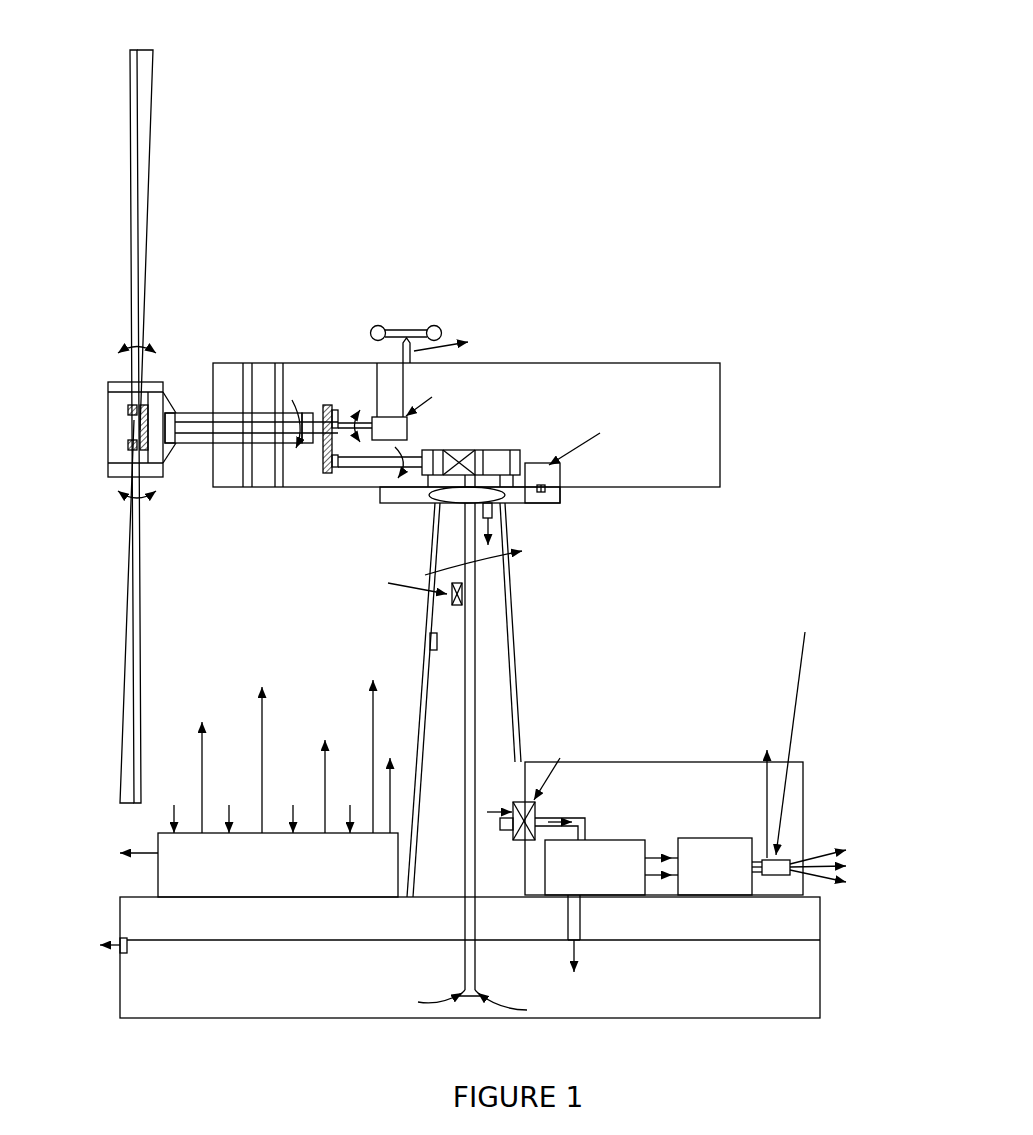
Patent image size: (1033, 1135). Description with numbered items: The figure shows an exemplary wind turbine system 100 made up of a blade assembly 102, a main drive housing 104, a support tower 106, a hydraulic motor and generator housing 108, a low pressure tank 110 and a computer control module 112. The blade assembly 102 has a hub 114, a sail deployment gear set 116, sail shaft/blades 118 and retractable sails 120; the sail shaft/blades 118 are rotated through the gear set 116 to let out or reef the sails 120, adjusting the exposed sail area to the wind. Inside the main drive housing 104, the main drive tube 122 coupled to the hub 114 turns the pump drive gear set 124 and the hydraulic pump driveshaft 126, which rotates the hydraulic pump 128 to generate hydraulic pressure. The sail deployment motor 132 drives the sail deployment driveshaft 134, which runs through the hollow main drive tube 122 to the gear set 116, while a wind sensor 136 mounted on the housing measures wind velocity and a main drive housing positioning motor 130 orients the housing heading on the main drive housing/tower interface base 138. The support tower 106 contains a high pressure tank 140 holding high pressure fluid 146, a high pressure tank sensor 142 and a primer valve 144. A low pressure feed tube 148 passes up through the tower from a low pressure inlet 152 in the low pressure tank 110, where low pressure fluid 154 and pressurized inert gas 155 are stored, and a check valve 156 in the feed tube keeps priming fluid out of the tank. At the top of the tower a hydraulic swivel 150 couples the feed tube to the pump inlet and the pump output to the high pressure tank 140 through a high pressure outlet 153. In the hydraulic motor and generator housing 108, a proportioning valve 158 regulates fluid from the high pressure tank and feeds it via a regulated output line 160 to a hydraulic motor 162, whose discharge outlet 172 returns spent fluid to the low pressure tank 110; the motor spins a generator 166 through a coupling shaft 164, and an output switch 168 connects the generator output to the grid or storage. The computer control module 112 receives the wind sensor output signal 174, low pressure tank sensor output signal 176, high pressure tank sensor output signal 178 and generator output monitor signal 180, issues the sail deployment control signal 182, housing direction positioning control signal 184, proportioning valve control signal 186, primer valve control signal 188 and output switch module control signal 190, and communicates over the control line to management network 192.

The wind turbine system 100 is at (380, 66).
The blade assembly 102 is at (125, 101).
The main drive housing 104 is at (625, 363).
The support tower 106 is at (507, 625).
The hydraulic motor and generator housing 108 is at (665, 762).
The low pressure tank 110 is at (628, 1018).
The computer control module 112 is at (278, 865).
The hub 114 is at (108, 448).
The sail deployment gear set 116 is at (130, 447).
The sail shaft/blade 118 is at (107, 725).
The retractable sail 120 is at (132, 698).
The main drive tube 122 is at (200, 448).
The pump drive gear set 124 is at (323, 447).
The hydraulic pump driveshaft 126 is at (370, 468).
The hydraulic pump 128 is at (456, 451).
The main drive housing positioning motor 130 is at (532, 494).
The sail deployment motor 132 is at (380, 425).
The sail deployment driveshaft 134 is at (188, 428).
The wind sensor 136 is at (418, 326).
The main drive housing/tower interface base 138 is at (522, 498).
The high pressure tank 140 is at (508, 648).
The high pressure tank sensor 142 is at (127, 946).
The primer valve 144 is at (449, 588).
The high pressure fluid 146 is at (437, 857).
The low pressure feed tube 148 is at (513, 720).
The hydraulic swivel 150 is at (505, 493).
The low pressure inlet 152 is at (462, 992).
The high pressure outlet 153 is at (492, 508).
The low pressure fluid 154 is at (270, 985).
The inert gas 155 is at (473, 922).
The check valve 156 is at (492, 967).
The proportioning valve 158 is at (536, 812).
The regulated output line 160 is at (584, 841).
The hydraulic motor 162 is at (628, 910).
The coupling shaft 164 is at (657, 856).
The generator 166 is at (720, 838).
The output switch 168 is at (783, 862).
The discharge outlet 172 is at (577, 920).
The wind sensor output signal 174 is at (353, 794).
The low pressure tank sensor output signal 176 is at (116, 843).
The high pressure tank sensor output signal 178 is at (233, 783).
The generator output monitor signal 180 is at (532, 774).
The sail deployment control signal 182 is at (352, 603).
The housing direction positioning control signal 184 is at (457, 603).
The proportioning valve control signal 186 is at (453, 764).
The primer valve control signal 188 is at (377, 703).
The output switch module control signal 190 is at (390, 627).
The control line to management network 192 is at (98, 835).